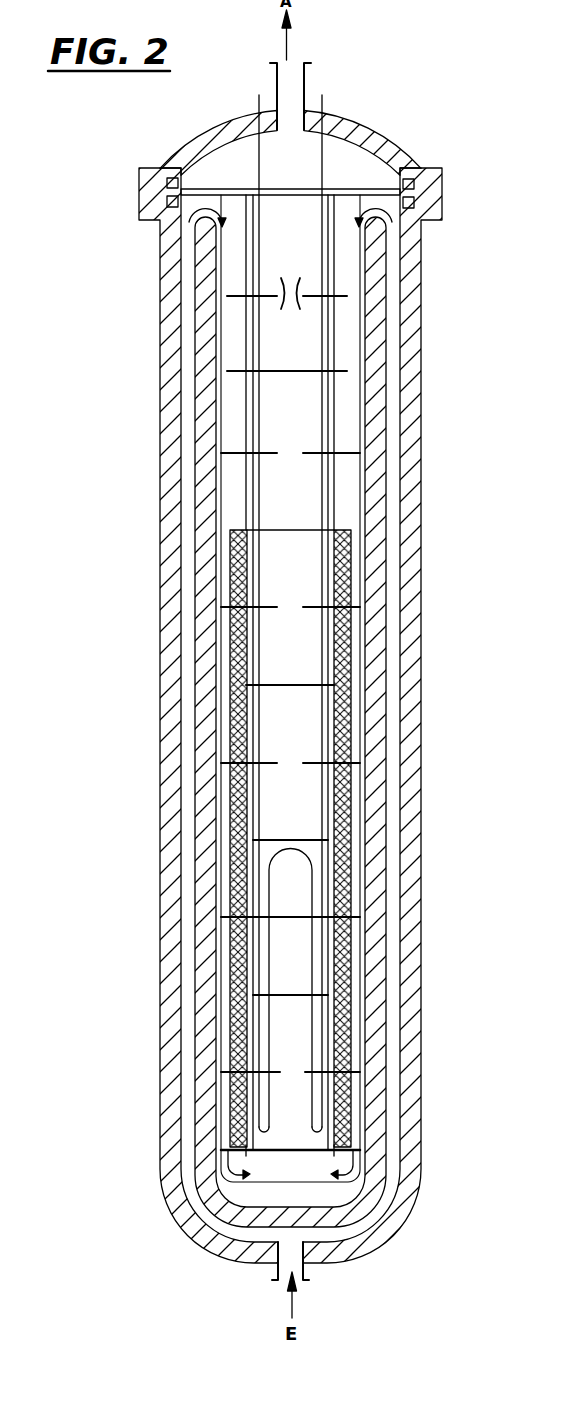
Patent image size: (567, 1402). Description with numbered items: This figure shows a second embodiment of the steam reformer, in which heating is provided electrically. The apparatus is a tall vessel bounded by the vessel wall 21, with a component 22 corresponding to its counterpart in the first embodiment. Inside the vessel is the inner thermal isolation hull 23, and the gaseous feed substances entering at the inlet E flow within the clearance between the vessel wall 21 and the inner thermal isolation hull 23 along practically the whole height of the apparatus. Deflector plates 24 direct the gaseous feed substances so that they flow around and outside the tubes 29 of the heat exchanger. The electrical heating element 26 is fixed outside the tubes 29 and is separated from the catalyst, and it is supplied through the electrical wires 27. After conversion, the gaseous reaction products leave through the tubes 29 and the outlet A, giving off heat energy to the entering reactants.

The vessel wall 21 is at (264, 696).
The vessel component 22 is at (170, 680).
The inner thermal isolation hull 23 is at (375, 1106).
The deflector plates 24 is at (232, 296).
The electrical heating element 26 is at (272, 938).
The electrical wires 27 is at (317, 98).
The tubes 29 is at (333, 259).